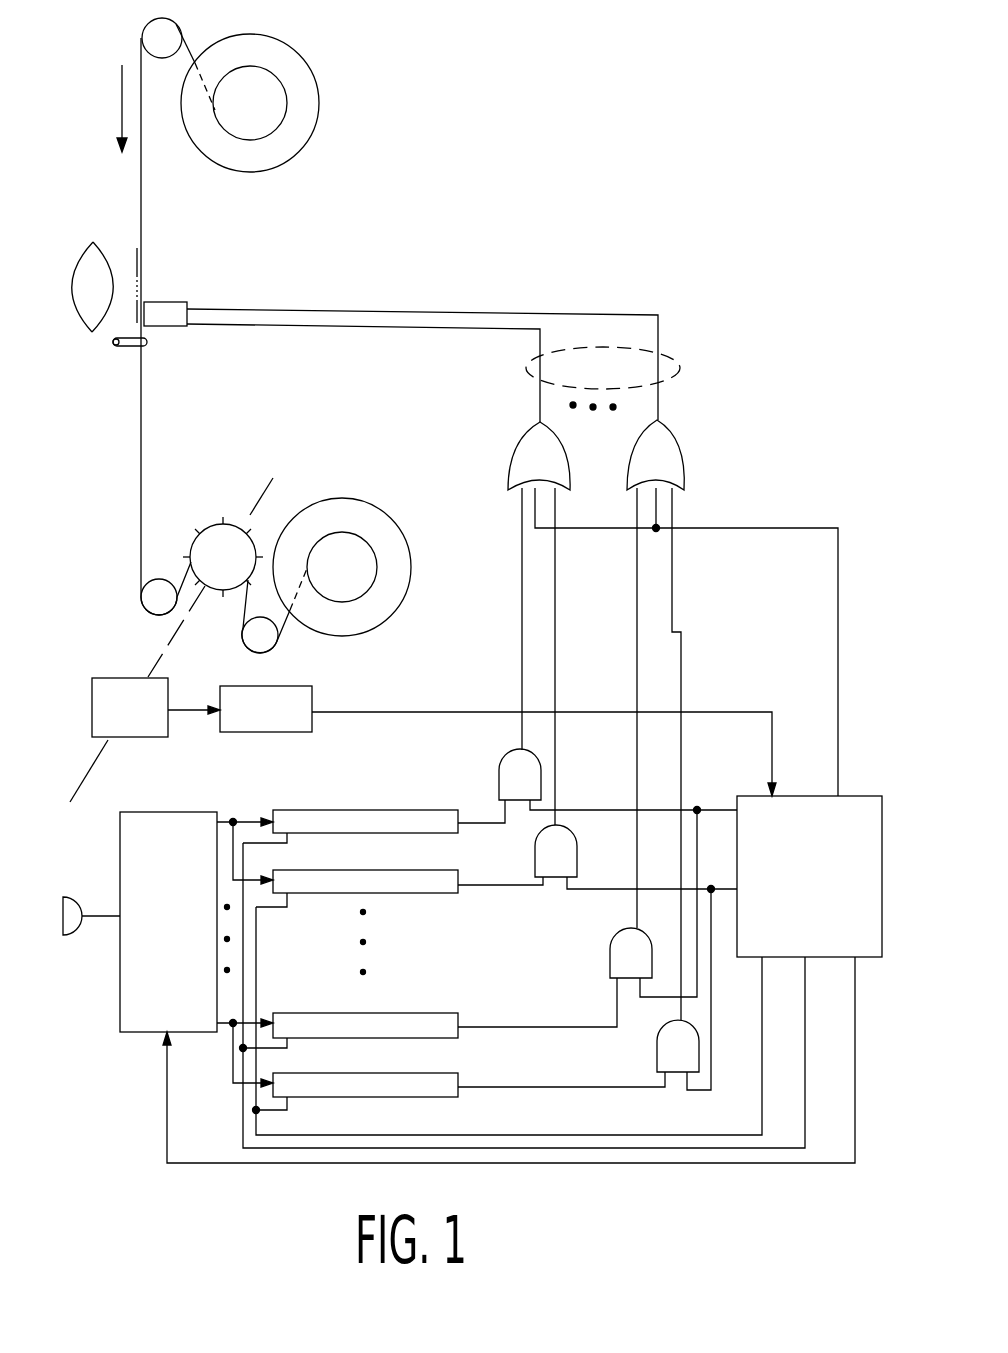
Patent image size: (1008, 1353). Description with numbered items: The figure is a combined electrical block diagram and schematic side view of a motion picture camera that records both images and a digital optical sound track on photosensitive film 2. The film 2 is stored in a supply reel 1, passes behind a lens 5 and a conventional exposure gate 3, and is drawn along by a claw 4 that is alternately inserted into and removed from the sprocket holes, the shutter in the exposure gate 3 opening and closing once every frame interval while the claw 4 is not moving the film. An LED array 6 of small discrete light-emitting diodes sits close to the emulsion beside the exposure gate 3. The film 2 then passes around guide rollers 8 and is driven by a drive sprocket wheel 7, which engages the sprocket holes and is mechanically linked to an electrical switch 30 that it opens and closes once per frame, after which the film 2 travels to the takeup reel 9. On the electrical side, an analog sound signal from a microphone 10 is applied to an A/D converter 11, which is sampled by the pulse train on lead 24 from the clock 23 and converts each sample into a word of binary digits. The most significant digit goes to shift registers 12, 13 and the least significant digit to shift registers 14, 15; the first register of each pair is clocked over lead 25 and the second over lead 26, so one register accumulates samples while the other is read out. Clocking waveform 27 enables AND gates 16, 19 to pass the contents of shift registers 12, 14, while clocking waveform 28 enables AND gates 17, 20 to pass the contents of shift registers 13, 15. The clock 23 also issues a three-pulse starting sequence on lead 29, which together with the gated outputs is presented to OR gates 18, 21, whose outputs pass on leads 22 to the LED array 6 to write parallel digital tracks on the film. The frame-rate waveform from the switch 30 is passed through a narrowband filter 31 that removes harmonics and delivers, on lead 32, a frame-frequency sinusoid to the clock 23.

The supply reel 1 is at (317, 72).
The photosensitive film 2 is at (142, 181).
The exposure gate 3 is at (135, 262).
The claw 4 is at (128, 348).
The lens 5 is at (83, 325).
The LED array 6 is at (172, 300).
The drive sprocket wheel 7 is at (210, 523).
The guide roller 8 is at (176, 18).
The takeup reel 9 is at (412, 558).
The microphone 10 is at (75, 937).
The A/D converter 11 is at (118, 1010).
The binary shift register 12 is at (353, 803).
The binary shift register 13 is at (342, 863).
The binary shift register 14 is at (335, 1013).
The binary shift register 15 is at (342, 1073).
The AND gate 16 is at (493, 770).
The AND gate 17 is at (533, 857).
The OR gate 18 is at (517, 442).
The AND gate 19 is at (607, 948).
The AND gate 20 is at (655, 1055).
The OR gate 21 is at (673, 442).
The leads 22 is at (682, 365).
The clock 23 is at (885, 828).
The lead 24 is at (855, 1013).
The lead 25 is at (805, 1040).
The lead 26 is at (762, 1077).
The clocking waveform 27 is at (718, 810).
The clocking waveform 28 is at (720, 887).
The lead 29 is at (840, 750).
The electrical switch 30 is at (148, 738).
The narrowband filter 31 is at (265, 733).
The lead 32 is at (393, 708).